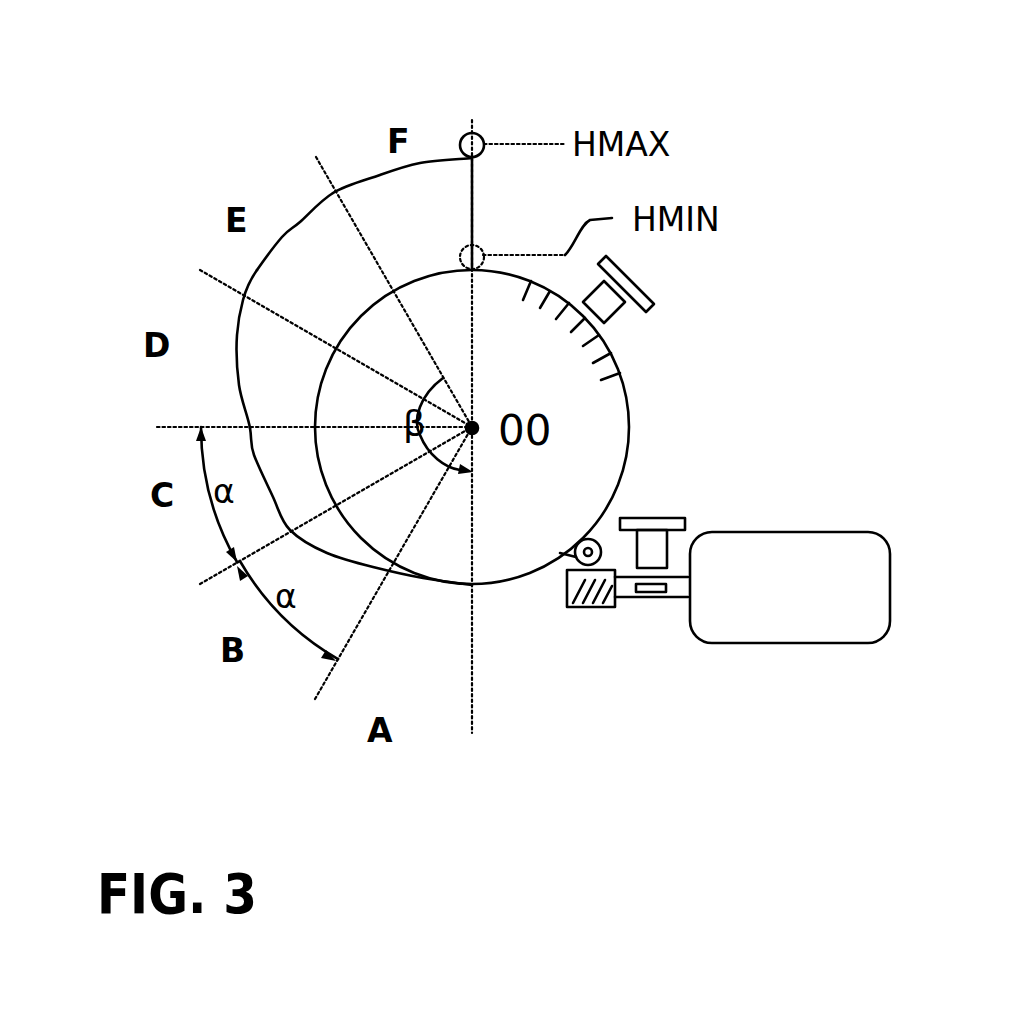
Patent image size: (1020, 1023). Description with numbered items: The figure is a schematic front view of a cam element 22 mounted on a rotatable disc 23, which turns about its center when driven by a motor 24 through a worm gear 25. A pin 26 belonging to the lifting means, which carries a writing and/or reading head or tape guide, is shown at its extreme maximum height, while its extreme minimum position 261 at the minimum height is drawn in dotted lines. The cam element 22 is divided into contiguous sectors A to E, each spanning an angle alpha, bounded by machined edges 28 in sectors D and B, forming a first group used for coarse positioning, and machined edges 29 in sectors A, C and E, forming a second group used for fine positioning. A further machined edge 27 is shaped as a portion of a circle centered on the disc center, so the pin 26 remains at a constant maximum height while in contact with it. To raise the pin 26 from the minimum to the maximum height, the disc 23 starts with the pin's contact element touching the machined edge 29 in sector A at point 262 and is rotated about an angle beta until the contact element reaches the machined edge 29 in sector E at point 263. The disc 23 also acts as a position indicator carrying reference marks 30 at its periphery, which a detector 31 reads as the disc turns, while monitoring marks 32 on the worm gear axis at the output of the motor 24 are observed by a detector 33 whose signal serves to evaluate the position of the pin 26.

The cam element 22 is at (282, 305).
The rotatable disc 23 is at (583, 465).
The motor 24 is at (837, 560).
The worm gear 25 is at (570, 600).
The pin 26 is at (467, 131).
The extreme minimum position 261 is at (480, 250).
The point 262 is at (466, 592).
The point 263 is at (322, 192).
The machined edge 27 is at (420, 162).
The machined edge 28 is at (237, 337).
The machined edge 29 is at (257, 270).
The reference marks 30 is at (547, 320).
The detector 31 is at (625, 291).
The monitoring marks 32 is at (657, 592).
The detector 33 is at (652, 533).